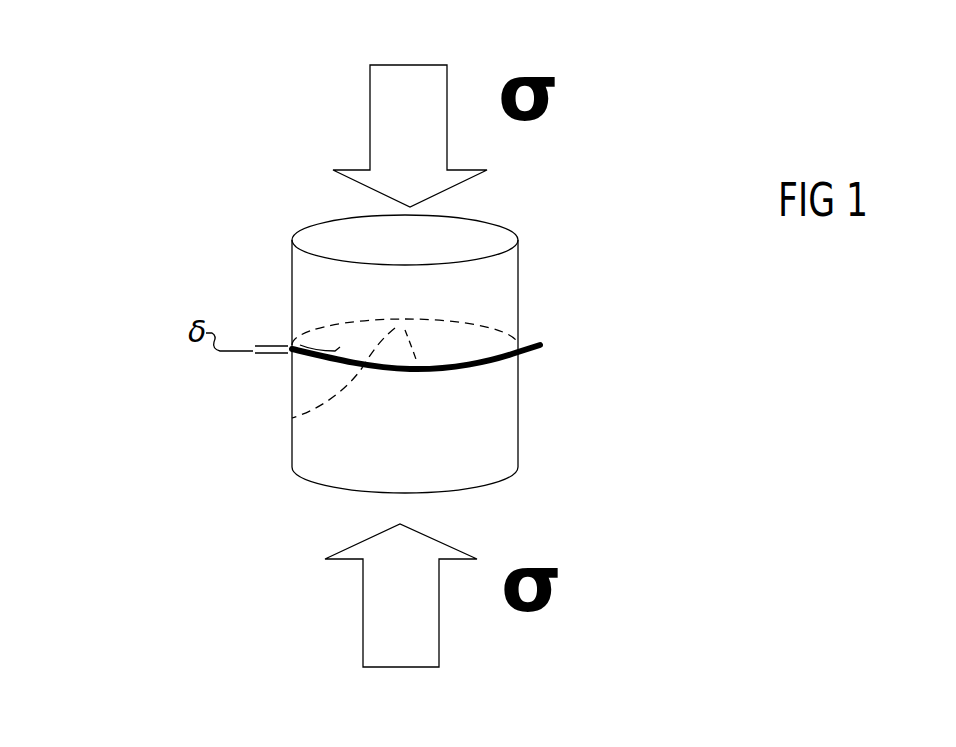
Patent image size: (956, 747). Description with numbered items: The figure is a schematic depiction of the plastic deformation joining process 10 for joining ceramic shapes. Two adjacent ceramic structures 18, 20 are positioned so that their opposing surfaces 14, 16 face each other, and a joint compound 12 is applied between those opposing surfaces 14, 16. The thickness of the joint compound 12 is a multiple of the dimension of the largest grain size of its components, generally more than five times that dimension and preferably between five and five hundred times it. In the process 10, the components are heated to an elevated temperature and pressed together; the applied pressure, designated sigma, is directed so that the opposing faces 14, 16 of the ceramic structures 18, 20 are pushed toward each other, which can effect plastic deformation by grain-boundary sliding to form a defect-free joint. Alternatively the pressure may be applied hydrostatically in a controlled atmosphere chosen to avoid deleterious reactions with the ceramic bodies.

The joining process 10 is at (633, 158).
The joint compound 12 is at (538, 346).
The opposing surface 14 is at (300, 345).
The opposing surface 16 is at (292, 418).
The ceramic structure 18 is at (405, 306).
The ceramic structure 20 is at (410, 390).